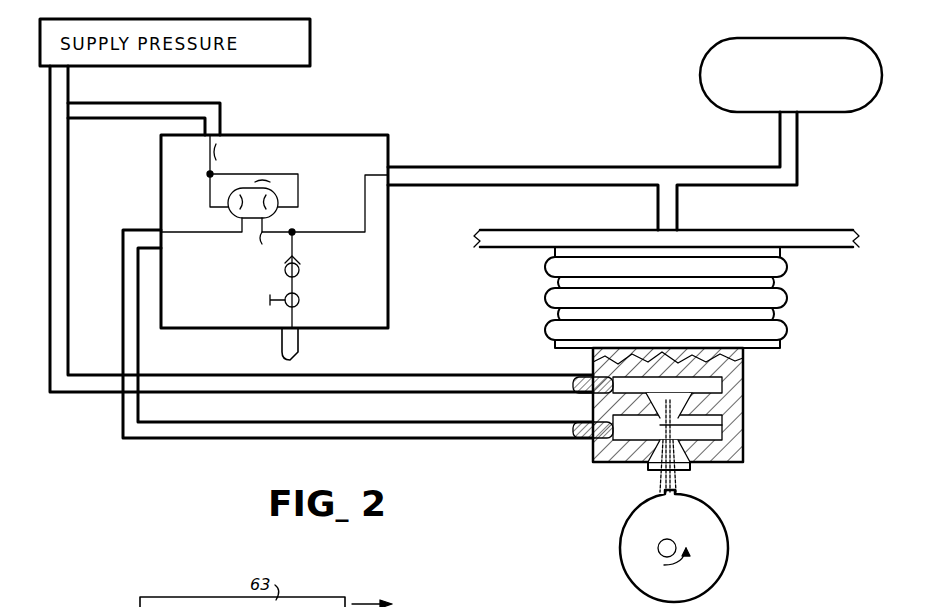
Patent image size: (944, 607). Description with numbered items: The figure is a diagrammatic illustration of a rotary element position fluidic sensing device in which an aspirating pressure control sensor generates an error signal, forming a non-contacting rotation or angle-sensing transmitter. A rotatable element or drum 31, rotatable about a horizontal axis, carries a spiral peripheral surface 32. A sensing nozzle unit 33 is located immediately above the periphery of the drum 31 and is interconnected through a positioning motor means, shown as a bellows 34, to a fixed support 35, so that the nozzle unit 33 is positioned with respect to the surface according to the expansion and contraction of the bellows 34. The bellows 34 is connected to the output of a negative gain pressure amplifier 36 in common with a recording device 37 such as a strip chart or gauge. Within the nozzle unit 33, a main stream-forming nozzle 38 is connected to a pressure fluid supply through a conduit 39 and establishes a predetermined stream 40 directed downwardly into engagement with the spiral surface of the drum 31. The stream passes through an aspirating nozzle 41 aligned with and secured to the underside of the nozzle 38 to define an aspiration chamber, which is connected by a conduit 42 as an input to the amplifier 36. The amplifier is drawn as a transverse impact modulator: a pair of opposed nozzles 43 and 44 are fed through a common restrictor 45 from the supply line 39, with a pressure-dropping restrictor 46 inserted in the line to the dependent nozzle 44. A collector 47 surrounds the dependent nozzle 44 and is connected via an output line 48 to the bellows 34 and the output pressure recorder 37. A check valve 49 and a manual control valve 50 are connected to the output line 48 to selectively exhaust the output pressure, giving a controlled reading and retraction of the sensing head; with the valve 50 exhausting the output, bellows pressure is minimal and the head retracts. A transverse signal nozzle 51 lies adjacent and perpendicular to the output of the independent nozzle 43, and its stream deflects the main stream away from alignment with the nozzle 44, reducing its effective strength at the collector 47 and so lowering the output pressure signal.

The drum 31 is at (630, 568).
The spiral peripheral surface 32 is at (702, 504).
The sensing nozzle unit 33 is at (705, 420).
The bellows 34 is at (786, 302).
The fixed support 35 is at (792, 238).
The negative gain pressure amplifier 36 is at (391, 135).
The recording device 37 is at (712, 72).
The main stream-forming nozzle 38 is at (724, 426).
The conduit 39 is at (232, 136).
The stream 40 is at (676, 472).
The aspirating nozzle 41 is at (650, 466).
The conduit 42 is at (190, 237).
The independent nozzle 43 is at (236, 194).
The dependent nozzle 44 is at (278, 205).
The common restrictor 45 is at (208, 152).
The pressure-dropping restrictor 46 is at (262, 174).
The collector 47 is at (280, 216).
The output line 48 is at (338, 233).
The check valve 49 is at (284, 270).
The manual control valve 50 is at (300, 300).
The transverse signal nozzle 51 is at (263, 244).